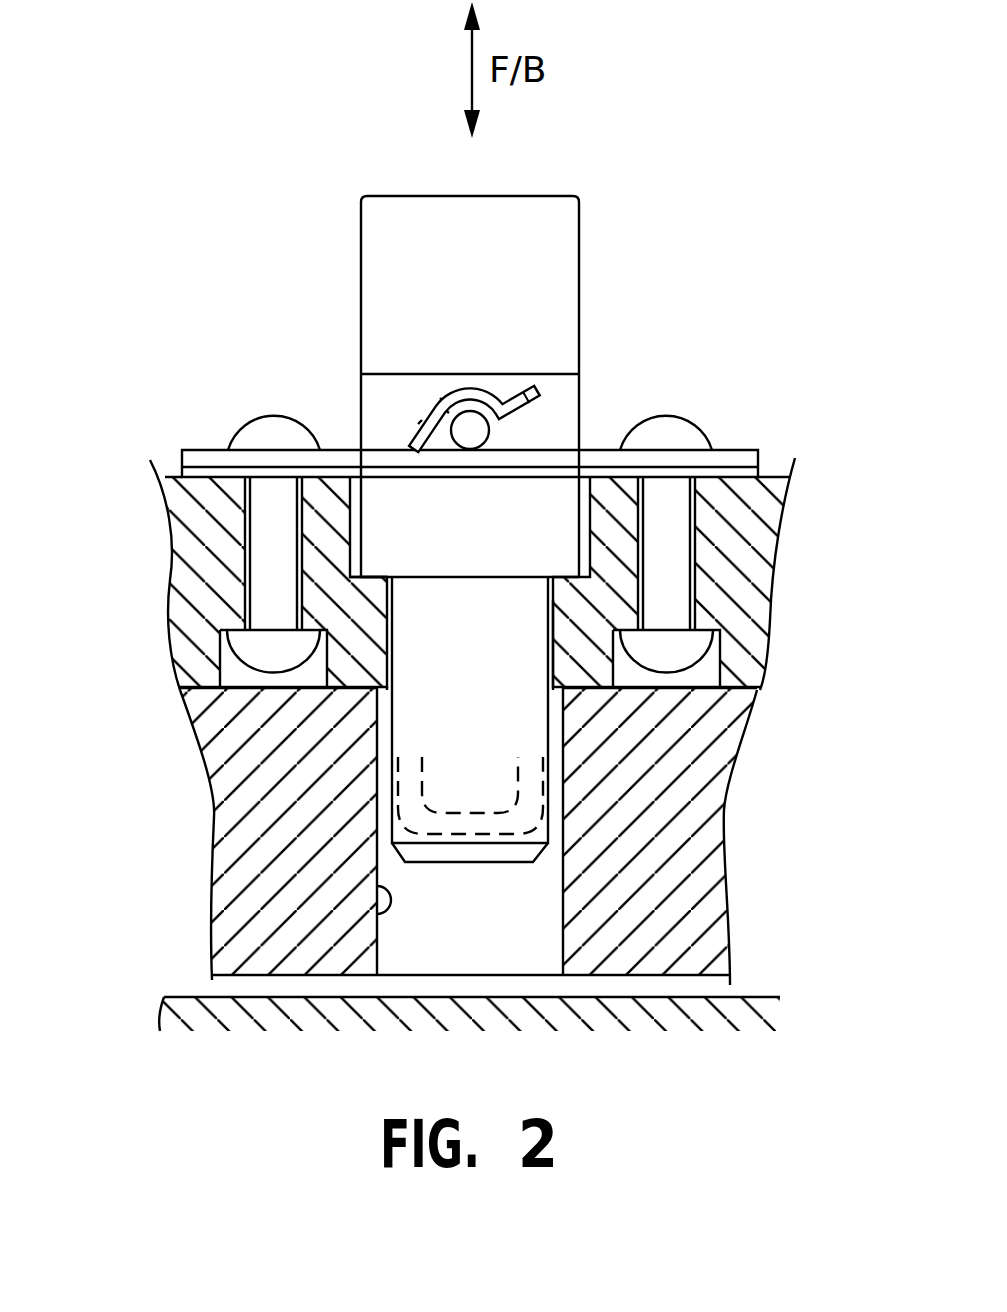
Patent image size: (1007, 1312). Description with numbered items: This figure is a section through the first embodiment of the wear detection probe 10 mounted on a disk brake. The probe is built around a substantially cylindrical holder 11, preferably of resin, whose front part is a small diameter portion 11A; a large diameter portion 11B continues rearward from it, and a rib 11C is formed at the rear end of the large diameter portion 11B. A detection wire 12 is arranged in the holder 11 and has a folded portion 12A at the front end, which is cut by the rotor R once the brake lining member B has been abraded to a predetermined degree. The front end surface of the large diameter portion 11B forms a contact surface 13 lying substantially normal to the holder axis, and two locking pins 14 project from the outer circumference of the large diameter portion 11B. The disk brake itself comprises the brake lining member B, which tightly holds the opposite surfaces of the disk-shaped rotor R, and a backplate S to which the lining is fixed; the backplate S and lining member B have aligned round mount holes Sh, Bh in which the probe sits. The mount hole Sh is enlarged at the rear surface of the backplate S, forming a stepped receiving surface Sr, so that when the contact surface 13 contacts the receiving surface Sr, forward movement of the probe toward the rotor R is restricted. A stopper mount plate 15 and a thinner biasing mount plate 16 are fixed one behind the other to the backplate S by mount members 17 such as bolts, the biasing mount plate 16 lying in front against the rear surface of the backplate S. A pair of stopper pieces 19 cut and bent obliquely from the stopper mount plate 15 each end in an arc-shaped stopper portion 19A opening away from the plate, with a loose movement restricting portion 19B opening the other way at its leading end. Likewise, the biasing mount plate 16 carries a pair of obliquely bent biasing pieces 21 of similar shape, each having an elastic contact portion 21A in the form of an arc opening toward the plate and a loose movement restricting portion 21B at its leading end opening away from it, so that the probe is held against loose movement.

The wear detection probe 10 is at (660, 236).
The holder 11 is at (580, 337).
The small diameter portion 11A is at (523, 722).
The large diameter portion 11B is at (563, 532).
The rib 11C is at (555, 214).
The detection wire 12 is at (543, 787).
The folded portion 12A is at (465, 826).
The contact surface 13 is at (590, 611).
The locking pin 14 is at (472, 430).
The stopper mount plate 15 is at (742, 453).
The biasing mount plate 16 is at (776, 496).
The mount member 17 is at (672, 574).
The stopper piece 19 is at (421, 421).
The stopper portion 19A is at (441, 399).
The loose movement restricting portion 19B is at (503, 407).
The biasing piece 21 is at (447, 452).
The elastic contact portion 21A is at (481, 400).
The loose movement restricting portion 21B is at (497, 408).
The backplate S is at (207, 537).
The receiving surface Sr is at (377, 578).
The mount hole Sh is at (392, 653).
The brake lining member B is at (224, 817).
The mount hole Bh is at (372, 918).
The rotor R is at (174, 995).